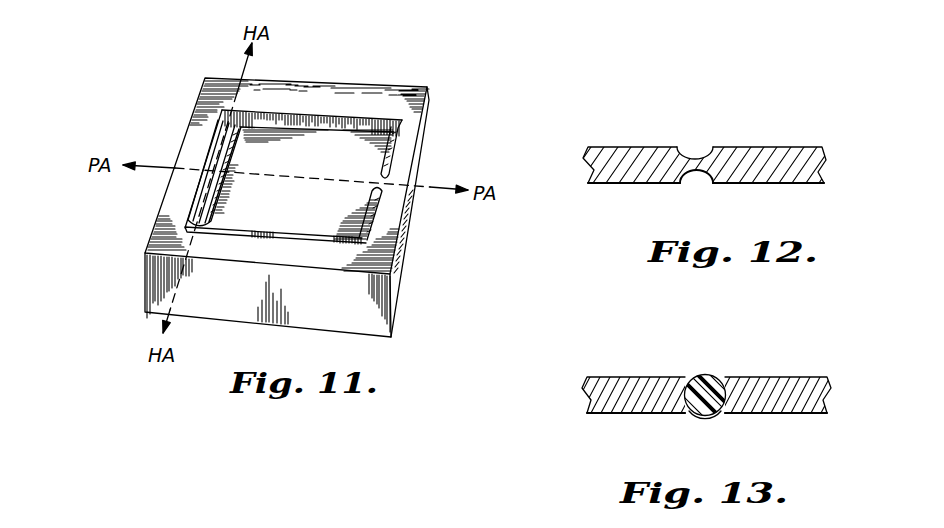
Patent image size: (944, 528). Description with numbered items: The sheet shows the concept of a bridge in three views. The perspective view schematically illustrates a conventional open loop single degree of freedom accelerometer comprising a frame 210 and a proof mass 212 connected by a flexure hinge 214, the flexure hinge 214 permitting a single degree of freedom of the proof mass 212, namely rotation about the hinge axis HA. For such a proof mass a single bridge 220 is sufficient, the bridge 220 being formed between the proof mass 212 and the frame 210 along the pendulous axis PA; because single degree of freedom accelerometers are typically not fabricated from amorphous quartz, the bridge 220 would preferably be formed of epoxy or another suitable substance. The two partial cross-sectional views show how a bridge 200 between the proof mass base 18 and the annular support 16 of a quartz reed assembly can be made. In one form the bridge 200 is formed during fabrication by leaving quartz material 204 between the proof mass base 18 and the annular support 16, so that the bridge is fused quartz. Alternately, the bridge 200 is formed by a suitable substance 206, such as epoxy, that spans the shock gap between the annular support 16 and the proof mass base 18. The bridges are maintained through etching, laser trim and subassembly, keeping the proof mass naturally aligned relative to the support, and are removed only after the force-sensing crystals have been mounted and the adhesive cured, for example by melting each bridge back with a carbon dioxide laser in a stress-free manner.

In FIG. 11, the frame 210 is at (358, 100).
In FIG. 11, the proof mass 212 is at (306, 211).
In FIG. 11, the flexure hinge 214 is at (212, 161).
In FIG. 11, the bridge 220 is at (385, 186).
In FIG. 12, the annular support 16 is at (615, 172).
In FIG. 13, the annular support 16 is at (620, 383).
In FIG. 12, the proof mass base 18 is at (788, 152).
In FIG. 13, the proof mass base 18 is at (788, 383).
In FIG. 12, the bridge 200 is at (698, 182).
In FIG. 13, the bridge 200 is at (707, 417).
In FIG. 12, the quartz material 204 is at (697, 155).
In FIG. 13, the suitable substance 206 is at (703, 381).